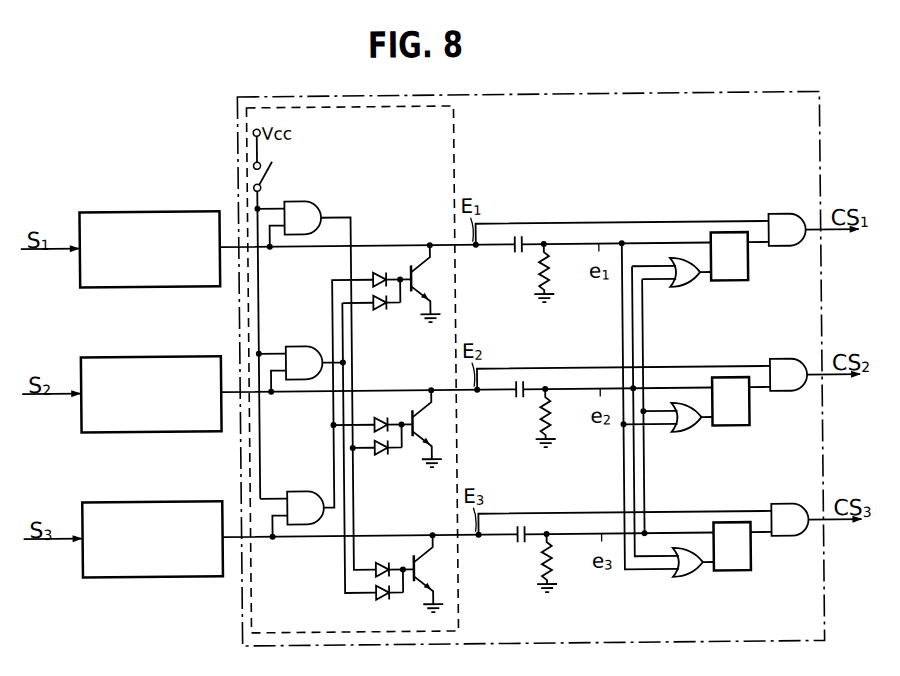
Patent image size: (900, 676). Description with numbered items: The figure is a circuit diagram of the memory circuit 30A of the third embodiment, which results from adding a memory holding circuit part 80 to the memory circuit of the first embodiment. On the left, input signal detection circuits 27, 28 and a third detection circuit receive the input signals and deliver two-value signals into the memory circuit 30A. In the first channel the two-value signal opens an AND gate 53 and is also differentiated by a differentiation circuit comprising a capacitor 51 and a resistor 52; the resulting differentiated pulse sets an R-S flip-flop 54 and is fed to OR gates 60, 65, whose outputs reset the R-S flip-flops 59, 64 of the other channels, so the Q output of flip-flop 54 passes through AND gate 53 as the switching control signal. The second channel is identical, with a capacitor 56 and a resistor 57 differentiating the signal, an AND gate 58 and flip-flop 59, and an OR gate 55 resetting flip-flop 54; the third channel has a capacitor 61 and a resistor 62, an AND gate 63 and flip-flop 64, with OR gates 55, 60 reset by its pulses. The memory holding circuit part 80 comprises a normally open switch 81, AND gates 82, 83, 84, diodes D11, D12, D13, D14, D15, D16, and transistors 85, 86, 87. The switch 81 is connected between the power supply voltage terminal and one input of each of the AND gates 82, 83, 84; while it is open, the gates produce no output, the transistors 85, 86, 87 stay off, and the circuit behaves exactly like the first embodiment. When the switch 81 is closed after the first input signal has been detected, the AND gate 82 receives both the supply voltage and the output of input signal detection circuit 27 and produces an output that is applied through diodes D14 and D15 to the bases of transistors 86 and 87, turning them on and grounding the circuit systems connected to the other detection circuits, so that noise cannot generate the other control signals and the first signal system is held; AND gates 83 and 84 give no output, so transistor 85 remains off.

The input signal detection circuit 27 is at (141, 208).
The input signal detection circuit 28 is at (141, 353).
The memory circuit 30A is at (519, 95).
The memory holding circuit part 80 is at (456, 140).
The normally open switch 81 is at (276, 160).
The AND gate 82 is at (316, 200).
The AND gate 83 is at (303, 345).
The AND gate 84 is at (303, 490).
The transistor 85 is at (439, 284).
The transistor 86 is at (440, 429).
The transistor 87 is at (442, 574).
The diode D11 is at (387, 266).
The diode D12 is at (387, 315).
The diode D13 is at (388, 411).
The diode D14 is at (389, 460).
The diode D15 is at (390, 556).
The diode D16 is at (390, 605).
The capacitor 51 is at (513, 255).
The resistor 52 is at (540, 273).
The AND gate 53 is at (784, 216).
The R-S flip-flop 54 is at (733, 283).
The OR gate 55 is at (684, 289).
The capacitor 56 is at (513, 400).
The resistor 57 is at (540, 418).
The AND gate 58 is at (784, 361).
The R-S flip-flop 59 is at (733, 428).
The OR gate 60 is at (684, 434).
The capacitor 61 is at (513, 545).
The resistor 62 is at (540, 573).
The AND gate 63 is at (784, 506).
The R-S flip-flop 64 is at (733, 573).
The OR gate 65 is at (684, 579).